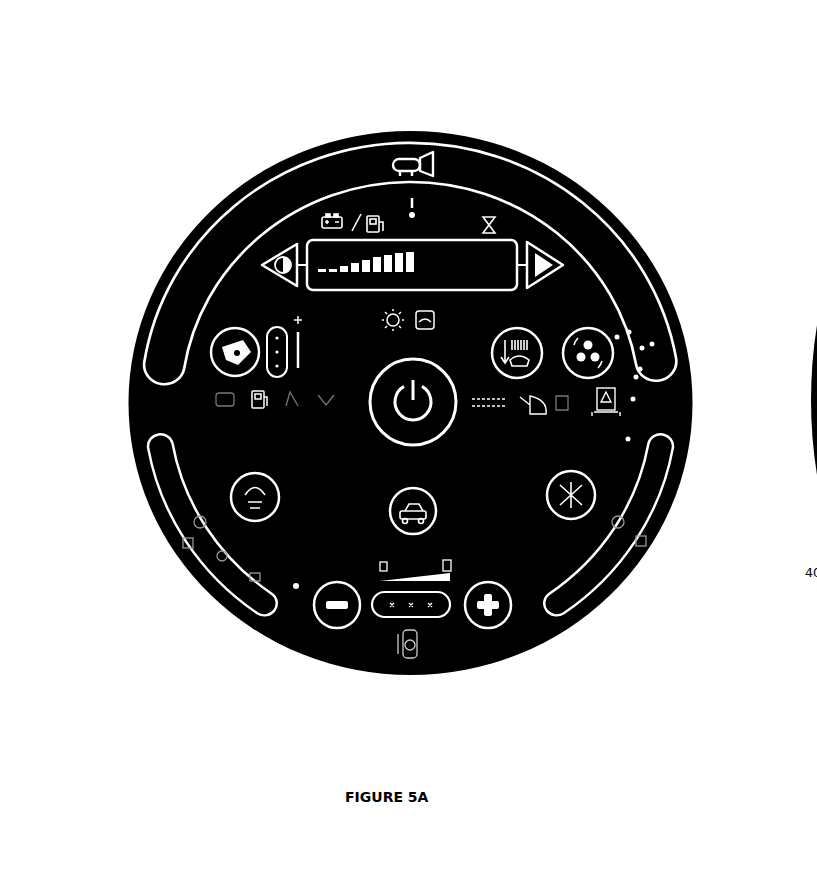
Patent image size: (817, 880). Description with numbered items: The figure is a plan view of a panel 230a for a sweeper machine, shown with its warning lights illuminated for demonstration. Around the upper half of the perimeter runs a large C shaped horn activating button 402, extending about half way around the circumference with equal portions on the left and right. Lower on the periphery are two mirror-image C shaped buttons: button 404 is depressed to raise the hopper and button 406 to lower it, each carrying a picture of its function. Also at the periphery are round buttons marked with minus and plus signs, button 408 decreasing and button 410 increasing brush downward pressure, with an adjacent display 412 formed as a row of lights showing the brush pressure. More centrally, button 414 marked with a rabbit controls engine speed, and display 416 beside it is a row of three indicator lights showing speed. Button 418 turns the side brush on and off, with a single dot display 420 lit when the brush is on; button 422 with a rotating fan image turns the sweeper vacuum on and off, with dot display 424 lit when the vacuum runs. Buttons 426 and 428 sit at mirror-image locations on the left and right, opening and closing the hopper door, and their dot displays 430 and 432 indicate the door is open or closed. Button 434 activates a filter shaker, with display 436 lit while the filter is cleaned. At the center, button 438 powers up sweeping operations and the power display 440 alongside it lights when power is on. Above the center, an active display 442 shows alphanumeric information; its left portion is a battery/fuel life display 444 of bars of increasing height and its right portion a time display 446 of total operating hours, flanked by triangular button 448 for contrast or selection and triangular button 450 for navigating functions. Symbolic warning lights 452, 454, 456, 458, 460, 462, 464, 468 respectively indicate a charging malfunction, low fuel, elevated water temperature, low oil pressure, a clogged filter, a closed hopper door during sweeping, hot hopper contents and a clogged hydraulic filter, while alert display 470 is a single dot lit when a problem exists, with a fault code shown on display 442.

The panel 230a is at (507, 97).
The horn activating button 402 is at (417, 152).
The C shaped button 404 is at (177, 543).
The C shaped button 406 is at (645, 536).
The button 408 is at (335, 620).
The button 410 is at (492, 620).
The display 412 is at (412, 694).
The button 414 is at (217, 330).
The display 416 is at (197, 297).
The button 418 is at (628, 333).
The display 420 is at (598, 328).
The button 422 is at (616, 338).
The display 424 is at (650, 345).
The button 426 is at (210, 578).
The button 428 is at (567, 513).
The display 430 is at (210, 482).
The display 432 is at (625, 460).
The button 434 is at (442, 618).
The display 436 is at (632, 398).
The button 438 is at (298, 588).
The power display 440 is at (198, 339).
The active display 442 is at (380, 238).
The battery/fuel life display 444 is at (340, 205).
The time display 446 is at (497, 240).
The button 448 is at (273, 247).
The button 450 is at (543, 327).
The warning light 452 is at (195, 399).
The warning light 454 is at (188, 433).
The warning light 456 is at (197, 460).
The warning light 458 is at (262, 563).
The warning light 460 is at (640, 347).
The warning light 462 is at (637, 369).
The warning light 464 is at (628, 437).
The warning light 468 is at (634, 375).
The alert display 470 is at (423, 210).